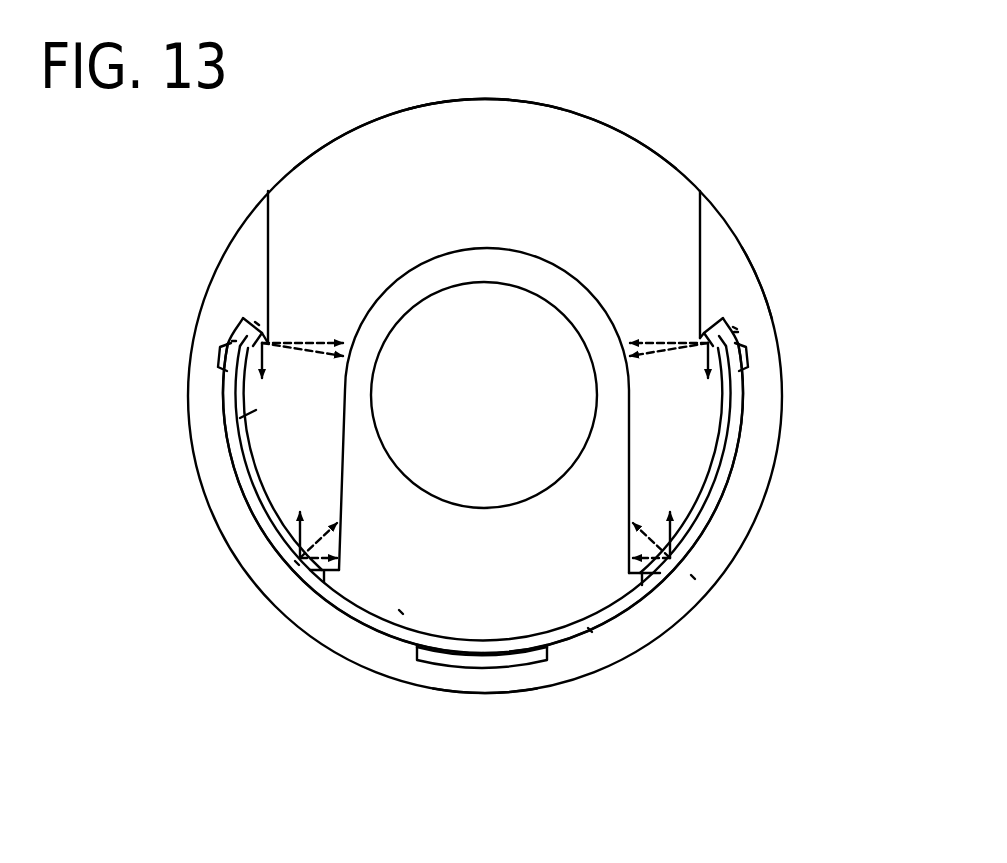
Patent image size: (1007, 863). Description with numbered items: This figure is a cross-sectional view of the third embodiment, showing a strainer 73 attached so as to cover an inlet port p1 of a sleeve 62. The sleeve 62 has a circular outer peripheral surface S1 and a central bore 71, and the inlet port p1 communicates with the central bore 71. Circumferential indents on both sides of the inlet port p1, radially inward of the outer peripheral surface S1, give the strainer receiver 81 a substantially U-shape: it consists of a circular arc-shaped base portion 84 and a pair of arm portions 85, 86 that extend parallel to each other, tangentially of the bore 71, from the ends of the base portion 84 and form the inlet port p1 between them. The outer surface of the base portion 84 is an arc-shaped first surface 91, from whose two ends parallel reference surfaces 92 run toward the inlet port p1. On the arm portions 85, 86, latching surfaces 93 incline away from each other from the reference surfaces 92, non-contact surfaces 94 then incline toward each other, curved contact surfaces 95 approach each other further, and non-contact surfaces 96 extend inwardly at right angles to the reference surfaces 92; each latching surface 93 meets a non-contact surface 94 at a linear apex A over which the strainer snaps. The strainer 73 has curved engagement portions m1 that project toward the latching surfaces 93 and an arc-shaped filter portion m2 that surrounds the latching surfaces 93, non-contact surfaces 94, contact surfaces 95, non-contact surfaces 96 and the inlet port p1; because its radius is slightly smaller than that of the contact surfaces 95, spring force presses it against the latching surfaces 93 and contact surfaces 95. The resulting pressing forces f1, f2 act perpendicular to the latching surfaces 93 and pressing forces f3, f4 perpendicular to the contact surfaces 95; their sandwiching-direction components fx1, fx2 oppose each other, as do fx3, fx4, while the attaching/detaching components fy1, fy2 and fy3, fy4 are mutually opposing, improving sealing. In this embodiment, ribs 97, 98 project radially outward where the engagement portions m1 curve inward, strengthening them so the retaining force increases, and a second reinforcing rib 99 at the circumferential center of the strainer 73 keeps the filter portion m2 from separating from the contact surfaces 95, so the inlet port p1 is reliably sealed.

The sleeve 62 is at (644, 119).
The first surface 91 is at (455, 98).
The base portion 84 is at (498, 136).
The outer peripheral surface S1 is at (758, 280).
The strainer 73 is at (552, 667).
The reference surfaces 92 is at (268, 250).
The strainer receiver 81 is at (673, 254).
The central bore 71 is at (500, 396).
The contact surfaces 95 is at (277, 550).
The non-contact surfaces 94 is at (250, 507).
The latching surfaces 93 is at (232, 378).
The arm portion 85 is at (262, 458).
The arm portion 86 is at (703, 446).
The rib 97 is at (215, 357).
The rib 98 is at (748, 355).
The non-contact surfaces 96 is at (317, 580).
The second reinforcing rib 99 is at (479, 672).
The linear apex A is at (248, 414).
The engagement portions m1 is at (236, 341).
The filter portion m2 is at (590, 630).
The inlet port p1 is at (401, 612).
The component force fx1 is at (302, 326).
The pressing force f1 is at (302, 364).
The component force fy1 is at (271, 378).
The component force fx2 is at (669, 326).
The pressing force f2 is at (669, 365).
The component force fy2 is at (698, 377).
The component force fx3 is at (347, 558).
The pressing force f3 is at (337, 524).
The component force fy3 is at (298, 519).
The component force fx4 is at (621, 558).
The pressing force f4 is at (629, 524).
The component force fy4 is at (673, 519).